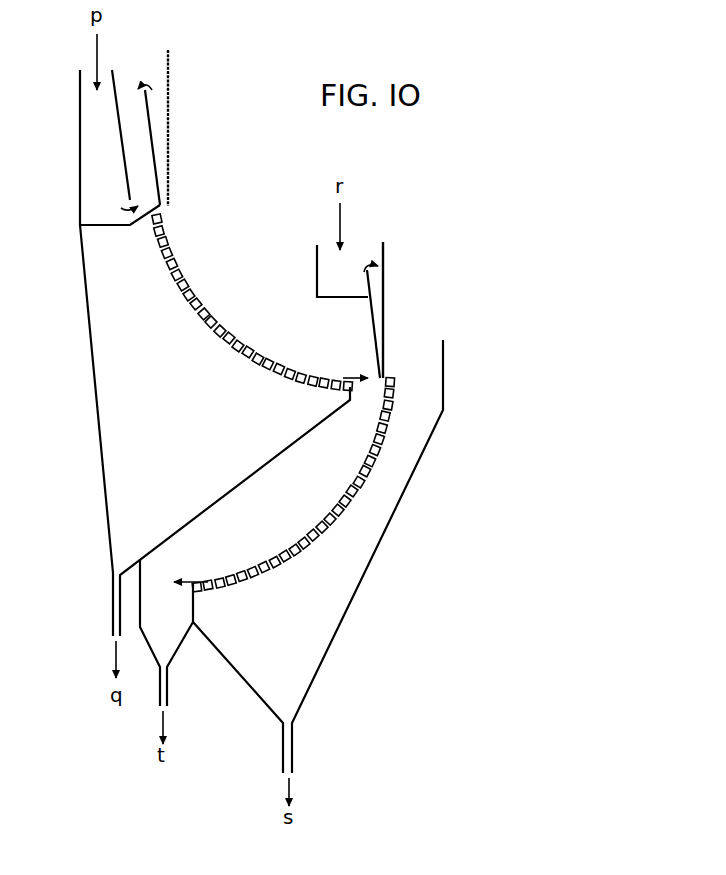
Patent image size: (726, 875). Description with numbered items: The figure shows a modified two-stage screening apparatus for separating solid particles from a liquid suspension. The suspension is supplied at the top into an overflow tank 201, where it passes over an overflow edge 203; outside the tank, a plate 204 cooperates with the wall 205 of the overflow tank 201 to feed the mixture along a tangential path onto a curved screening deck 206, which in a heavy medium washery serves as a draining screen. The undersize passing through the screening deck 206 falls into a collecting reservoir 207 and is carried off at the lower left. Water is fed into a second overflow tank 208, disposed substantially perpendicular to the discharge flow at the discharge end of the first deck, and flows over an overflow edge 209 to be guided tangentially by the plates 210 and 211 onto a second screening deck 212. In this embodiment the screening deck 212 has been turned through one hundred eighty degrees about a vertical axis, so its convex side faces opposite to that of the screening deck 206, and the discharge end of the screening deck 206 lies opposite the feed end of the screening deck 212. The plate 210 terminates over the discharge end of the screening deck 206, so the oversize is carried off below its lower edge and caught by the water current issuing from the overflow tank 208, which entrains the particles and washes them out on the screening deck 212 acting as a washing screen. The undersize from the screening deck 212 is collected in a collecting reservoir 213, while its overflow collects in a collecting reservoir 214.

The overflow tank 201 is at (120, 147).
The overflow edge 203 is at (150, 97).
The plate 204 is at (168, 76).
The wall 205 is at (153, 146).
The screening deck 206 is at (183, 289).
The collecting reservoir 207 is at (98, 412).
The overflow tank 208 is at (314, 263).
The overflow edge 209 is at (352, 281).
The plate 210 is at (372, 323).
The plate 211 is at (387, 278).
The screening deck 212 is at (305, 548).
The collecting reservoir 213 is at (385, 537).
The collecting reservoir 214 is at (211, 666).